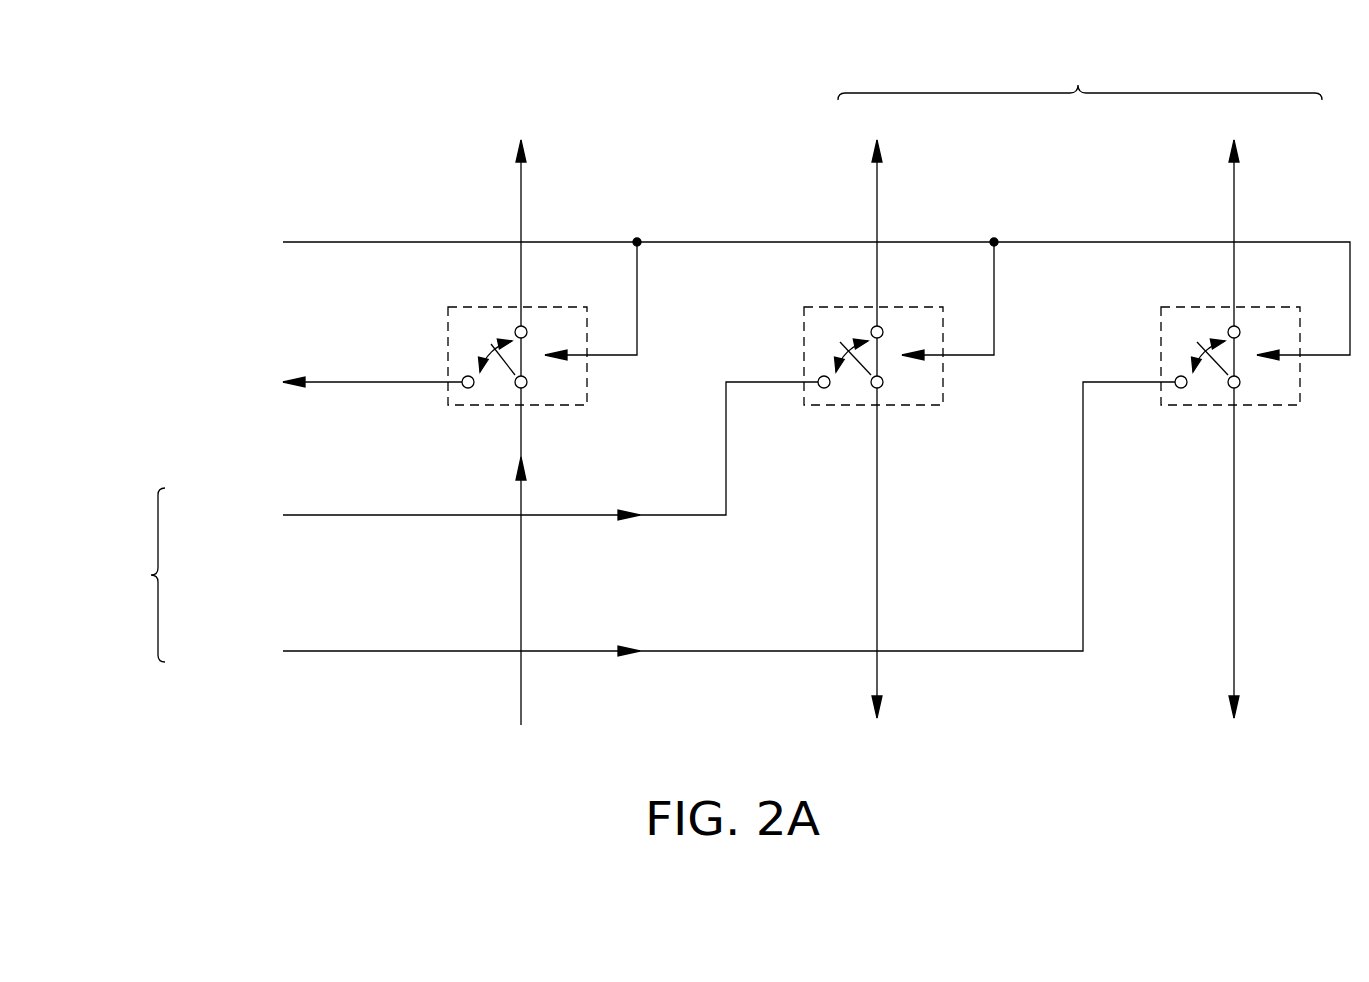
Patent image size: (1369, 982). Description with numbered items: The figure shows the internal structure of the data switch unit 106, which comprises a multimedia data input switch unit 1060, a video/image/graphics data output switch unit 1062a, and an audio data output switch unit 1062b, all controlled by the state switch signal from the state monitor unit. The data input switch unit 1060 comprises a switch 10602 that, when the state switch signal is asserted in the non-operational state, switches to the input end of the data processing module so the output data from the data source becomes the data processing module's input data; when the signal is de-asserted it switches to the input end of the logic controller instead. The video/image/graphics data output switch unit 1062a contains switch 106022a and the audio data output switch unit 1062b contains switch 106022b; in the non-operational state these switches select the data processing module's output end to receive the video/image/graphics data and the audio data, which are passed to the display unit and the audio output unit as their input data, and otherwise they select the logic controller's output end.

The data switch unit 106 is at (178, 82).
The data input switch unit 1060 is at (448, 337).
The switch 10602 is at (494, 368).
The video/image/graphics data output switch unit 1062a is at (804, 337).
The first switch blade 106022a is at (850, 368).
The audio data output switch unit 1062b is at (1161, 337).
The second switch blade 106022b is at (1209, 368).